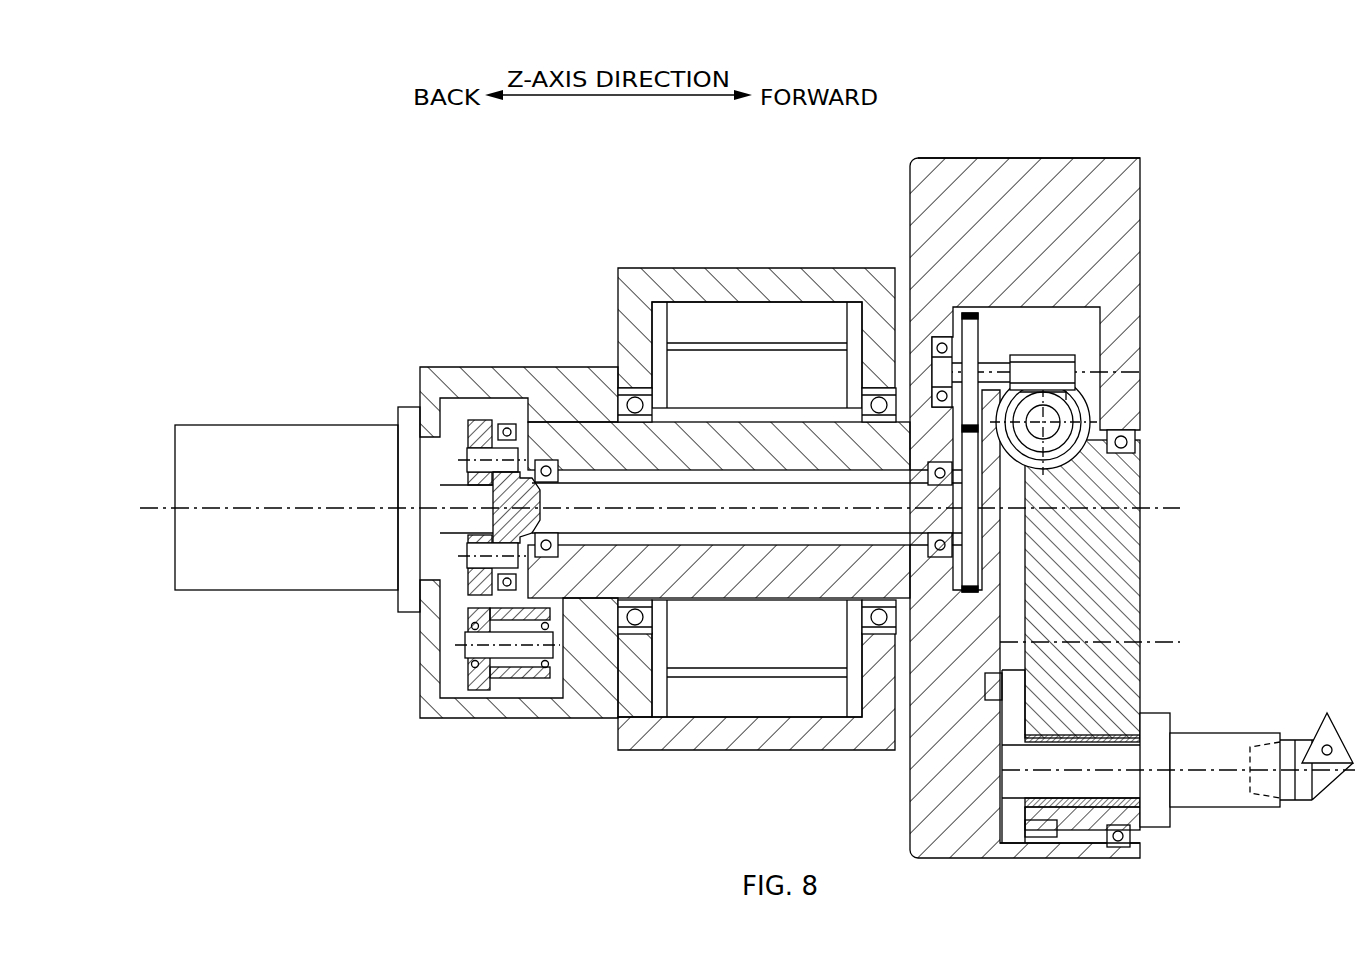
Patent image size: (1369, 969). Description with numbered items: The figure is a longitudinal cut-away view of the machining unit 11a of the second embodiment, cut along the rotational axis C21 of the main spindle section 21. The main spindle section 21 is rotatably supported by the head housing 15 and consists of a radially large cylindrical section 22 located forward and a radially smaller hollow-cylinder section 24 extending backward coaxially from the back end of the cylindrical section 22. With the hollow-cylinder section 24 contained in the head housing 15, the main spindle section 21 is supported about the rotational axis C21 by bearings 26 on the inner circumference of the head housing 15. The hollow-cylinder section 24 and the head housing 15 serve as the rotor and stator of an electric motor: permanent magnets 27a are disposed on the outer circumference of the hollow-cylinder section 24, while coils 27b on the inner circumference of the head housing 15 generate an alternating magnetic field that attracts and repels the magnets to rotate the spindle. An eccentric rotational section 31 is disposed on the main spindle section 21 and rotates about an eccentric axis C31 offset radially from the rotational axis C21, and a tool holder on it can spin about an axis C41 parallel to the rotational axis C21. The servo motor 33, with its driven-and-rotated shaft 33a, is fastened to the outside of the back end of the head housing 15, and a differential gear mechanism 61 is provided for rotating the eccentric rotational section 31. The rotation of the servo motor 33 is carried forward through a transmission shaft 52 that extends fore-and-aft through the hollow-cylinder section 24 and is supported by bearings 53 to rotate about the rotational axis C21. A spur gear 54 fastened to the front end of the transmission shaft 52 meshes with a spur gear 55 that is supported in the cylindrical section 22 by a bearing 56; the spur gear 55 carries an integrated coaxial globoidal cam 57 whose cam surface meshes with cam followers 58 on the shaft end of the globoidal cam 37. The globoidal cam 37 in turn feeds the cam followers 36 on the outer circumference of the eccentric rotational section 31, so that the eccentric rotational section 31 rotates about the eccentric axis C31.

The machining unit 11a is at (1128, 118).
The main spindle section 21 is at (946, 150).
The cylindrical section 22 is at (1028, 175).
The hollow-cylinder section 24 is at (697, 435).
The permanent magnet 27a is at (778, 348).
The coils 27b is at (823, 318).
The bearing 56 is at (932, 326).
The head housing 15 is at (532, 360).
The servo motor 33 is at (262, 440).
The driven-and-rotated shaft 33a is at (430, 488).
The bearings 26 is at (618, 407).
The transmission shaft 52 is at (740, 500).
The spur gear 55 is at (978, 325).
The globoidal cam 57 is at (1040, 350).
The cam followers 58 is at (1068, 398).
The globoidal cam 37 is at (1060, 414).
The cam followers 36 is at (1132, 452).
The bearings 53 is at (562, 526).
The rotational axis C21 is at (822, 512).
The spur gear 54 is at (967, 546).
The eccentric rotational section 31 is at (1130, 572).
The eccentric axis C31 is at (1176, 636).
The axis C41 is at (1222, 758).
The differential gear mechanism 61 is at (448, 618).